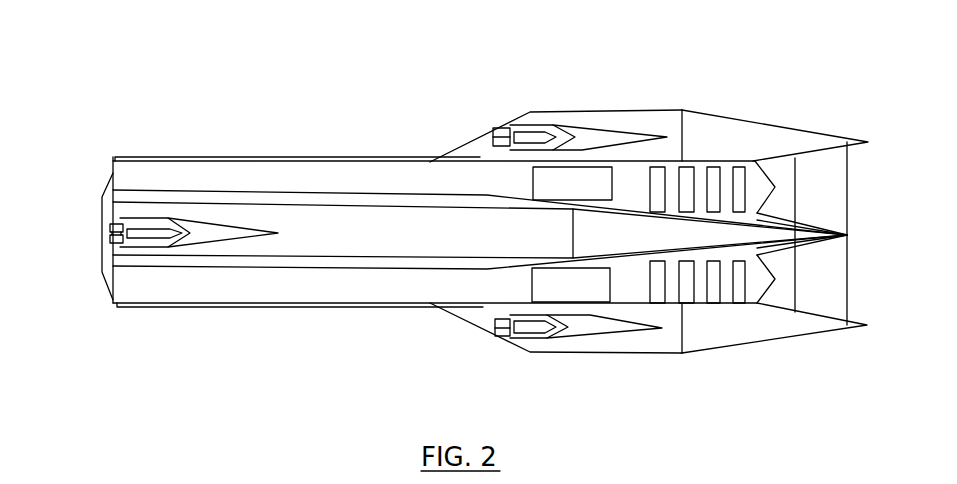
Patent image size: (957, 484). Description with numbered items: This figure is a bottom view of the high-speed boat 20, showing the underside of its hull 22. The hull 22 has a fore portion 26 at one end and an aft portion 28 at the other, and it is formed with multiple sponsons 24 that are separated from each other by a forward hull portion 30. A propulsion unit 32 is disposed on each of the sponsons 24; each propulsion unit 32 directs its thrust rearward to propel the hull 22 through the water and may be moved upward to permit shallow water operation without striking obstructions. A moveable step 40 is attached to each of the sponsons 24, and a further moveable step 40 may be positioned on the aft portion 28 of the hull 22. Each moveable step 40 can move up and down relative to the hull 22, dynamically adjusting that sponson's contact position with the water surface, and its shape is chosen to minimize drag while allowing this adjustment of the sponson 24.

The high-speed boat 20 is at (367, 123).
The hull 22 is at (390, 293).
The sponsons 24 is at (723, 125).
The fore portion 26 is at (815, 132).
The aft portion 28 is at (147, 295).
The forward hull portion 30 is at (634, 242).
The propulsion unit 32 is at (140, 239).
The moveable step 40 is at (217, 237).